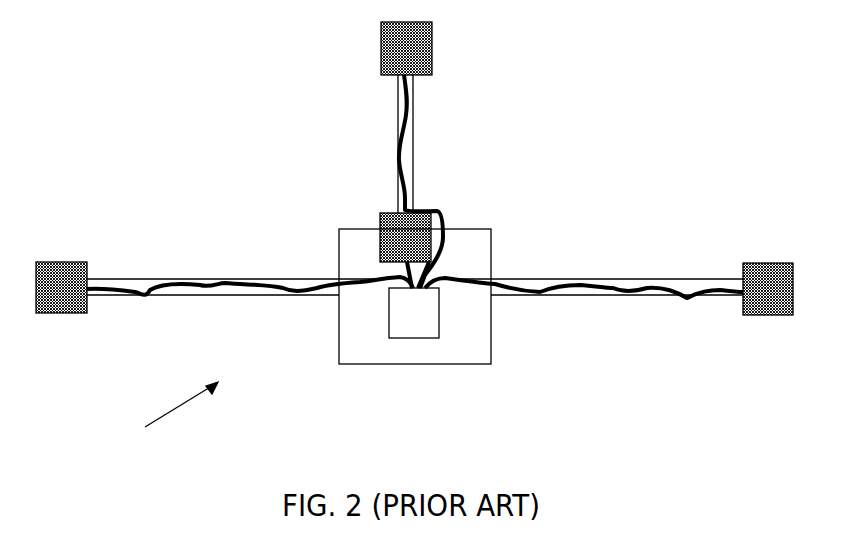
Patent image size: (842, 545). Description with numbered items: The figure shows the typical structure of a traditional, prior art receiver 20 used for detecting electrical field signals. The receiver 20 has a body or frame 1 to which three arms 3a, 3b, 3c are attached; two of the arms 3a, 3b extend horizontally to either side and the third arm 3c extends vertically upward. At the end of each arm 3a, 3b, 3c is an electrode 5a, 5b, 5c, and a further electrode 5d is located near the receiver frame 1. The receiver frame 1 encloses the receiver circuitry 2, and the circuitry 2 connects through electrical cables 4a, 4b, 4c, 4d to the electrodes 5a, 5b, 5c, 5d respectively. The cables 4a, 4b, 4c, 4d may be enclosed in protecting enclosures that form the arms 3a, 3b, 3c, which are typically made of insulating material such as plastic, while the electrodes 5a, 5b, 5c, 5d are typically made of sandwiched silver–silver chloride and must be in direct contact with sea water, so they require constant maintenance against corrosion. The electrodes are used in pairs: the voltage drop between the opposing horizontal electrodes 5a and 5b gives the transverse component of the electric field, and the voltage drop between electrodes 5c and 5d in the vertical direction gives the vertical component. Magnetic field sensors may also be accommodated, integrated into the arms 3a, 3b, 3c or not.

The body (frame) 1 is at (465, 228).
The receiver circuitry 2 is at (438, 318).
The arm 3a is at (562, 280).
The arm 3b is at (147, 277).
The arm 3c is at (398, 123).
The electrical cable 4a is at (627, 285).
The electrical cable 4b is at (220, 283).
The electrical cable 4c is at (407, 276).
The electrical cable 4d is at (408, 113).
The electrode 5a is at (764, 264).
The electrode 5b is at (75, 262).
The electrode 5c is at (382, 70).
The electrode 5d is at (381, 219).
The receiver 20 is at (158, 414).